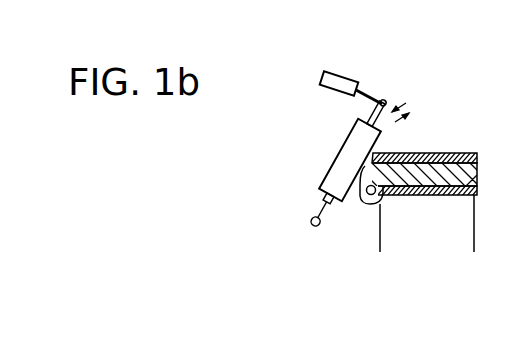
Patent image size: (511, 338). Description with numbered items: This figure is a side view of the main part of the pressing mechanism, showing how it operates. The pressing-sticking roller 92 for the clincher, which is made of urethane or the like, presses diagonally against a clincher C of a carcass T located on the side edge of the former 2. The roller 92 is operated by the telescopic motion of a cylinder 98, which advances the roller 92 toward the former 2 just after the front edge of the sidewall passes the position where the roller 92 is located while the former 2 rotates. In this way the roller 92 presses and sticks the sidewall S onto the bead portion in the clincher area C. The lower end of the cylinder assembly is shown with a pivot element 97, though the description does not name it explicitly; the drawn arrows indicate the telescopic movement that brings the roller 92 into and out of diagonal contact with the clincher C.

The cylinder 98 is at (348, 70).
The pressing-sticking roller for clincher 92 is at (338, 150).
The cylinder rod pivot 97 is at (313, 227).
The sidewall S is at (445, 153).
The carcass T is at (467, 155).
The former 2 is at (476, 192).
The clincher C is at (394, 203).